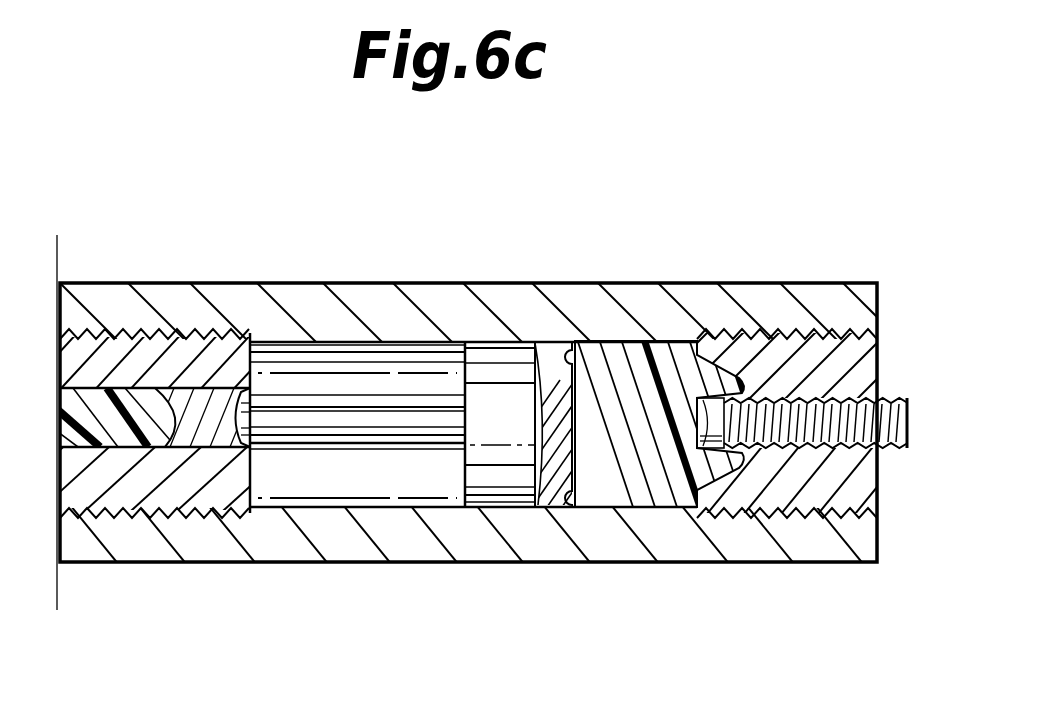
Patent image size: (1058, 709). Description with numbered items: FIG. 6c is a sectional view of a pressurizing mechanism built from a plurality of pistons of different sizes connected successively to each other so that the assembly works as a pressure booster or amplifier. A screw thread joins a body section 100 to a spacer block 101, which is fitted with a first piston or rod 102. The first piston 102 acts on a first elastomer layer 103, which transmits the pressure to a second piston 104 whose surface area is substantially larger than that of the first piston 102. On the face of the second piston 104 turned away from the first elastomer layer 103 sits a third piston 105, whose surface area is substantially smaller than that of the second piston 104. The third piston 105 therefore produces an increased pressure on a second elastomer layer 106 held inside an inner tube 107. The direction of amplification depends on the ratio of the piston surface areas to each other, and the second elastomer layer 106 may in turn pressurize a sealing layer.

The body section 100 is at (383, 307).
The spacer block 101 is at (803, 360).
The first piston or rod 102 is at (900, 447).
The first elastomer layer 103 is at (627, 433).
The second piston 104 is at (502, 472).
The third piston 105 is at (287, 417).
The second elastomer layer 106 is at (113, 423).
The inner tube 107 is at (145, 358).